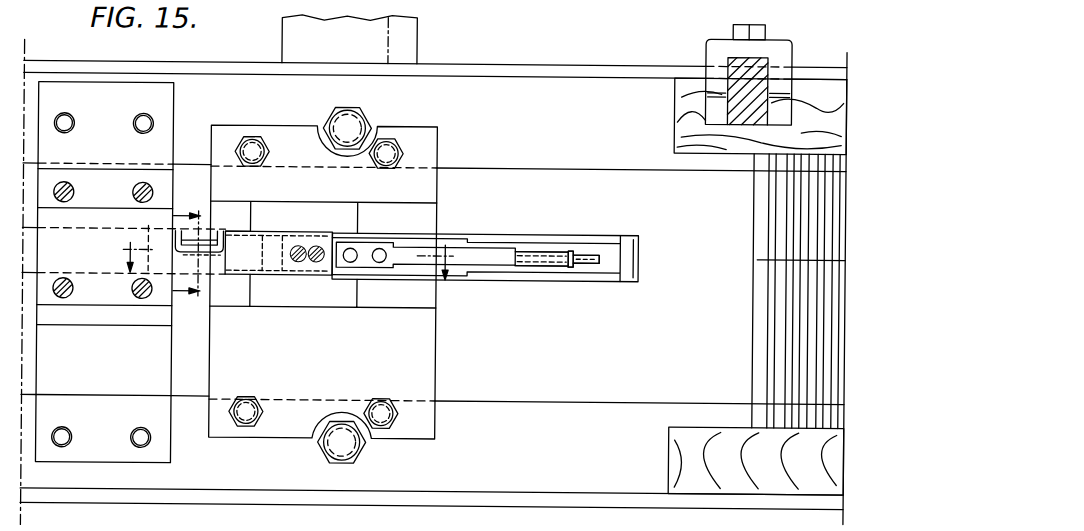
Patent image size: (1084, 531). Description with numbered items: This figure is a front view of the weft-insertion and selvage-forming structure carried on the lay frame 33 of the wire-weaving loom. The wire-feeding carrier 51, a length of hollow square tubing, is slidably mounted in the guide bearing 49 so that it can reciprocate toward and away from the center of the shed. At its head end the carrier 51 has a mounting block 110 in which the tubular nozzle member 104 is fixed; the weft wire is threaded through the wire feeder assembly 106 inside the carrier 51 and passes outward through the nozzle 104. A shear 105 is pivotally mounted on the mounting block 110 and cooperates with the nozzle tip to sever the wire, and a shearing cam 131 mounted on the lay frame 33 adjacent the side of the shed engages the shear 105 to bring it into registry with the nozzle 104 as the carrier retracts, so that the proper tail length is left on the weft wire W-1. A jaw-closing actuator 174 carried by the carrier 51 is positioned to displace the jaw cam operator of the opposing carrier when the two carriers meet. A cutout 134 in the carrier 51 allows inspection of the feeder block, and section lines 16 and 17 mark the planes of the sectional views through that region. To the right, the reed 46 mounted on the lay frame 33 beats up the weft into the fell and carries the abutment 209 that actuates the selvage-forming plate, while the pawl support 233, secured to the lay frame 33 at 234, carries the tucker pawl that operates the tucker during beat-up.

The lay frame 33 is at (418, 33).
The guide bearing 49 is at (87, 217).
The section line 16 is at (290, 252).
The section line 17 is at (193, 255).
The wire feeder assembly 106 is at (201, 238).
The cutout 134 is at (223, 233).
The wire-feeding carrier 51 is at (276, 273).
The mounting block 110 is at (457, 240).
The nozzle member 104 is at (533, 250).
The shearing cam 131 is at (593, 238).
The jaw-closing actuator 174 is at (540, 266).
The shear 105 is at (590, 262).
The abutment 209 is at (757, 213).
The weft wire W-1 is at (760, 259).
The reed 46 is at (777, 312).
The pawl support 233 is at (737, 58).
The securing means 234 is at (757, 30).